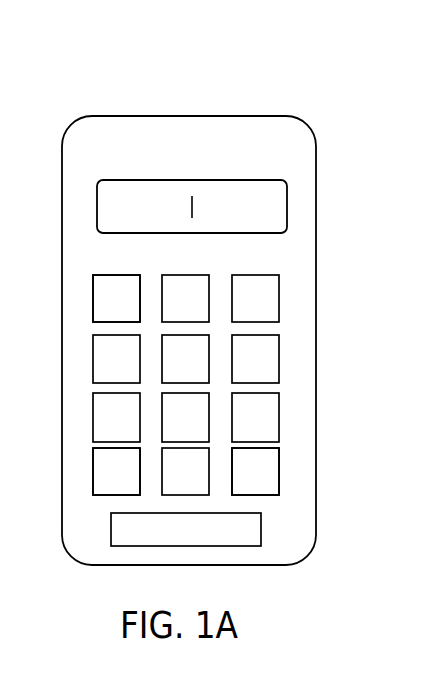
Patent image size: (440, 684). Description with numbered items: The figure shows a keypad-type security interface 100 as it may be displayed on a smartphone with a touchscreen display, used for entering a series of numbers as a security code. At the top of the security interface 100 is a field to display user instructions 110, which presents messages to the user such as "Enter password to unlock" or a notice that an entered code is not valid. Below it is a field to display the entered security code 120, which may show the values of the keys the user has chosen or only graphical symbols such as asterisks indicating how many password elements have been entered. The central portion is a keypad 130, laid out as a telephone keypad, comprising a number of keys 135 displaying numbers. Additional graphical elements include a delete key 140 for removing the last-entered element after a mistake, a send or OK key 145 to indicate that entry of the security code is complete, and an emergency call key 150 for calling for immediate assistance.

The security interface 100 is at (100, 83).
The field to display user instructions 110 is at (312, 156).
The field to display the entered security code 120 is at (290, 220).
The keypad 130 is at (295, 282).
The keys 135 is at (83, 290).
The delete key 140 is at (300, 490).
The send or OK key 145 is at (80, 472).
The emergency call key 150 is at (288, 530).